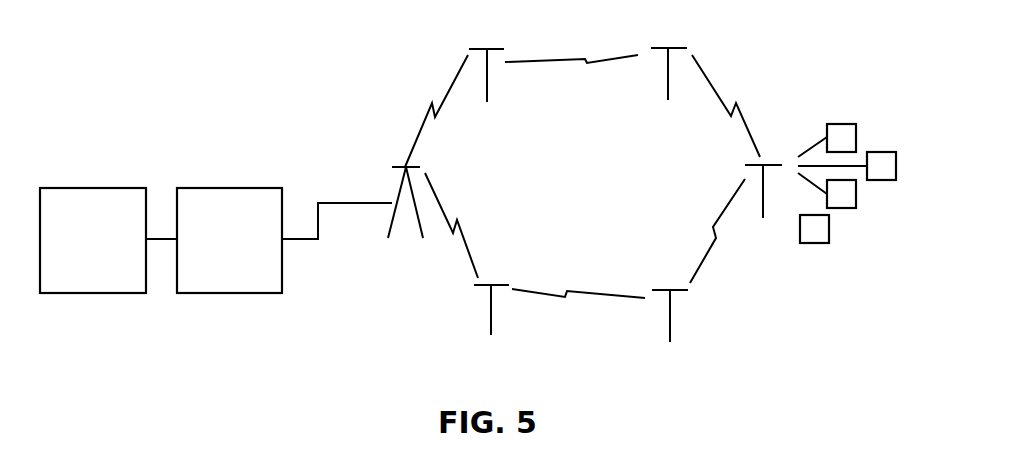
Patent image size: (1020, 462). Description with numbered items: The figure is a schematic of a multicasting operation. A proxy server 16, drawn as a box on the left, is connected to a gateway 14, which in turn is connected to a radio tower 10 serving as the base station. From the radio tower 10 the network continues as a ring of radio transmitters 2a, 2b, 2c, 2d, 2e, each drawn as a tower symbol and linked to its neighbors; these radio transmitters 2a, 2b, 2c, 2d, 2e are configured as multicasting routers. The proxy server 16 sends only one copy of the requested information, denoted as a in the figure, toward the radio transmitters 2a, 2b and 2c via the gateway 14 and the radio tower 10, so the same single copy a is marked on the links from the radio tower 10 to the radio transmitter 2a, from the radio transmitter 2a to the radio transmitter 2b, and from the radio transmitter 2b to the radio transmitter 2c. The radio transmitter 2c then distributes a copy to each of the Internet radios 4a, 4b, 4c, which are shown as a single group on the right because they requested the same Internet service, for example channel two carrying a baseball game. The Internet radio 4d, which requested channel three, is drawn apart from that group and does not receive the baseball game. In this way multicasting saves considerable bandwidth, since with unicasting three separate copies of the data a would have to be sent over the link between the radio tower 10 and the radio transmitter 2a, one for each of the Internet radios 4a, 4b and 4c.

The proxy server 16 is at (95, 188).
The gateway 14 is at (240, 188).
The radio tower 10 is at (406, 166).
The radio transmitter 2a is at (483, 49).
The radio transmitter 2b is at (673, 47).
The radio transmitter 2c is at (752, 163).
The radio transmitter 2d is at (672, 314).
The radio transmitter 2e is at (492, 308).
The Internet radio 4a is at (856, 135).
The Internet radio 4b is at (896, 168).
The Internet radio 4c is at (856, 195).
The Internet radio 4d is at (829, 228).
The requested information a is at (582, 95).